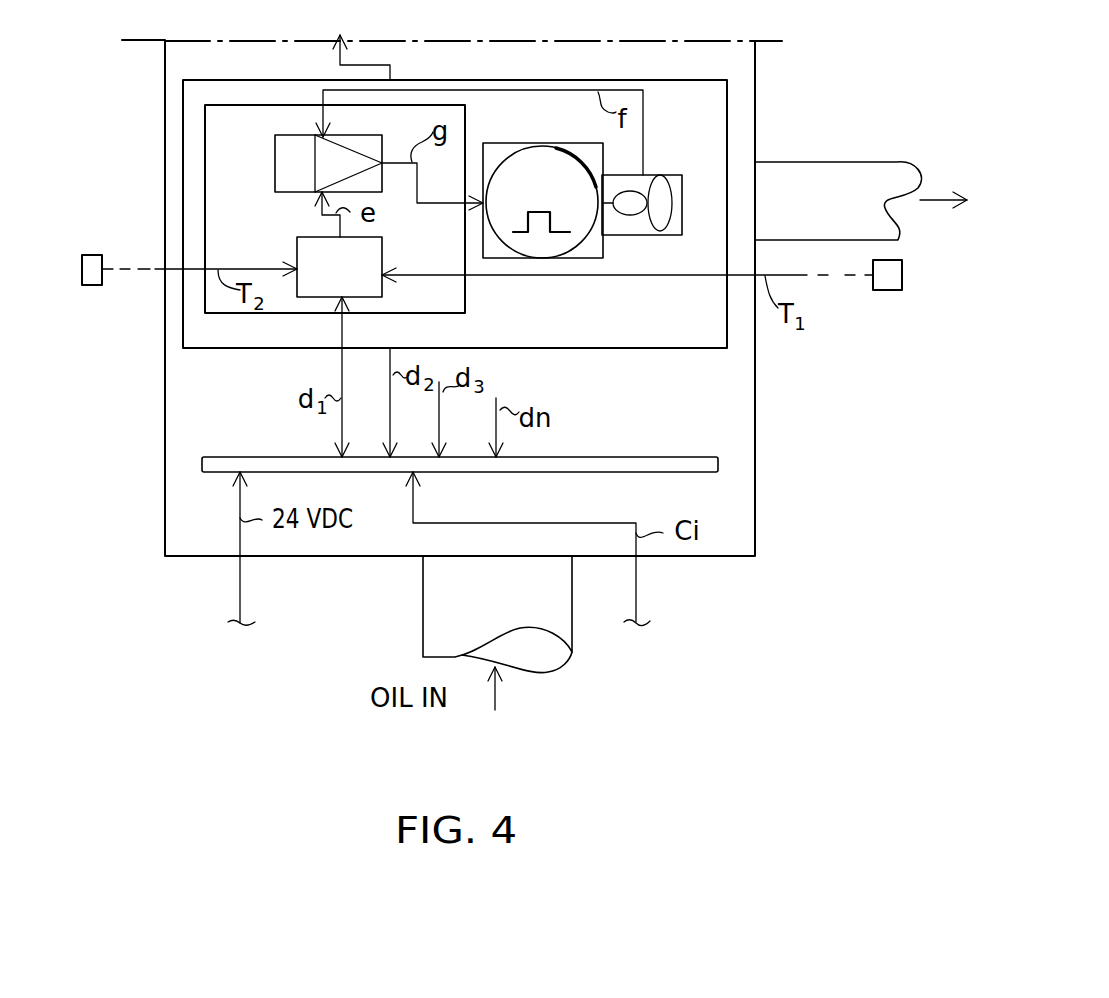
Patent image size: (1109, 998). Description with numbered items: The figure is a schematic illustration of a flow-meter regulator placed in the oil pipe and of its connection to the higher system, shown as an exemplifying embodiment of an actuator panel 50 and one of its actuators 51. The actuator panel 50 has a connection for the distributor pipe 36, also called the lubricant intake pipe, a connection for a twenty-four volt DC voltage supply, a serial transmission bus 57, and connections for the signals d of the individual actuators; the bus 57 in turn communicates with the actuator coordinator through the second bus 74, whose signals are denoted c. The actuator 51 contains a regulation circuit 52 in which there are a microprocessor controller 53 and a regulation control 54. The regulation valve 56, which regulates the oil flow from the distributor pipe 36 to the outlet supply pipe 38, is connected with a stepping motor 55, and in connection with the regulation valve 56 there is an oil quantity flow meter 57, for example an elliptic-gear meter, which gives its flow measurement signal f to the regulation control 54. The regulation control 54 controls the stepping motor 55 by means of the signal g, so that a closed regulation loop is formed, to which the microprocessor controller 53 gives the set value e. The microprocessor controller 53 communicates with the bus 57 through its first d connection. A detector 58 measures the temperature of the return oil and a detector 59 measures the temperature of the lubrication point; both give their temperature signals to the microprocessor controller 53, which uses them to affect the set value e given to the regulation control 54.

The distributor pipe 36 is at (560, 625).
The outlet supply pipe 38 is at (807, 175).
The actuator panel 50 is at (172, 418).
The actuator 51 is at (203, 328).
The regulation circuit 52 is at (467, 298).
The microprocessor controller 53 is at (372, 255).
The regulation control 54 is at (285, 185).
The stepping motor 55 is at (540, 160).
The regulation valve 56 is at (595, 250).
The oil quantity flow meter 57 is at (678, 180).
The detector of return oil temperature 58 is at (892, 283).
The detector of lubrication point temperature 59 is at (95, 280).
The second bus 74 is at (567, 522).